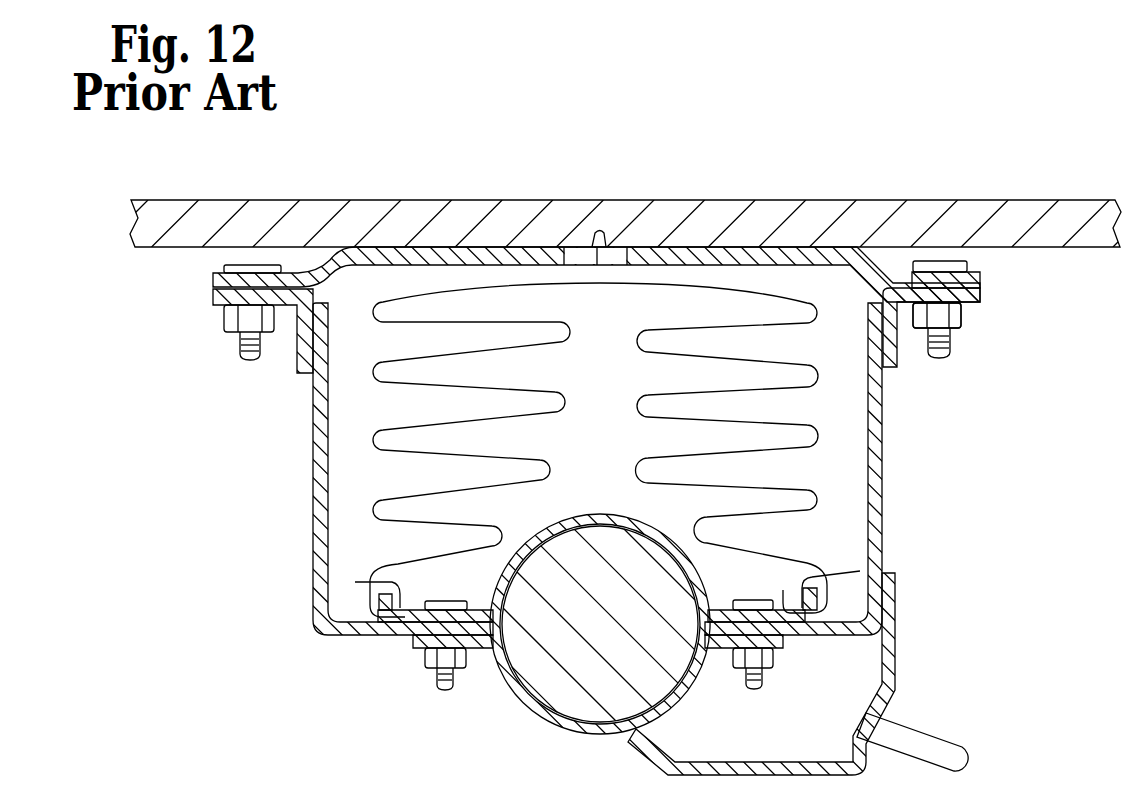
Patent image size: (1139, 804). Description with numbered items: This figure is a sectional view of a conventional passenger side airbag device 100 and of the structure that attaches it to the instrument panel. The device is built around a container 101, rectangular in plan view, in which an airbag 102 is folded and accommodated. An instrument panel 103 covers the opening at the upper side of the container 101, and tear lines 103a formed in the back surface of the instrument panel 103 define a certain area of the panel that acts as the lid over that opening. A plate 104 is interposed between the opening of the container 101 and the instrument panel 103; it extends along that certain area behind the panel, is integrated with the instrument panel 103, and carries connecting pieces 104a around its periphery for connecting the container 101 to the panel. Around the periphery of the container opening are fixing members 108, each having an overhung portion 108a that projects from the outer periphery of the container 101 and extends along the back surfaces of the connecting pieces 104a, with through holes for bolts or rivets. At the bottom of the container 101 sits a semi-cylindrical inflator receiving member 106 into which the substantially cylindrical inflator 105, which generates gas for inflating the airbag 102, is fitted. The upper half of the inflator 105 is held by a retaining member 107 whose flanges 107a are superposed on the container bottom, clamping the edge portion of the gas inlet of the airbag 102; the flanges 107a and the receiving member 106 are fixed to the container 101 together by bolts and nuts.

The passenger side airbag device 100 is at (991, 126).
The container 101 is at (882, 512).
The airbag 102 is at (488, 322).
The instrument panel 103 is at (892, 198).
The tear lines 103a is at (598, 235).
The plate 104 is at (367, 275).
The connecting pieces 104a is at (215, 280).
The inflator 105 is at (567, 673).
The inflator receiving member 106 is at (505, 672).
The retaining member 107 is at (580, 511).
The flanges 107a is at (370, 582).
The fixing members 108 is at (900, 348).
The overhung portion 108a is at (978, 292).